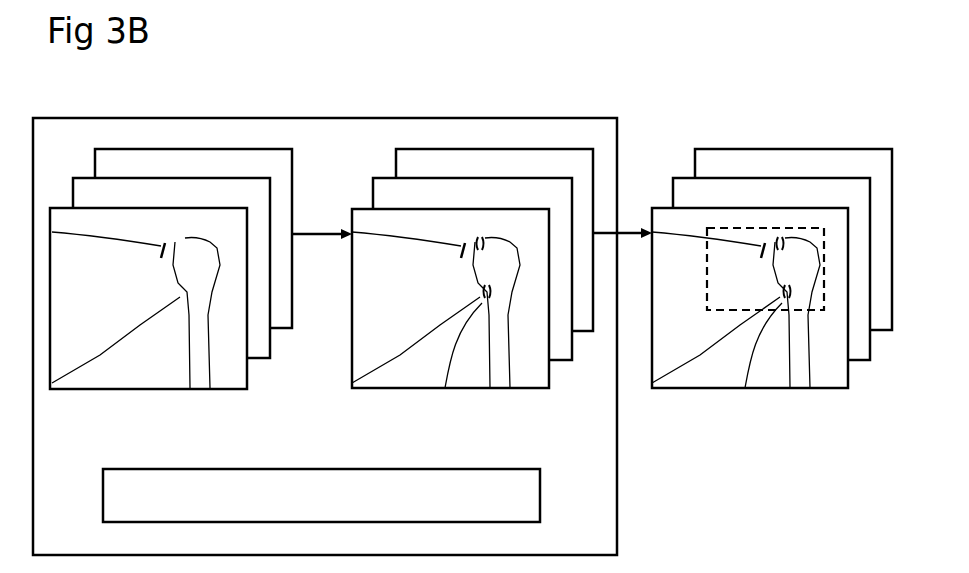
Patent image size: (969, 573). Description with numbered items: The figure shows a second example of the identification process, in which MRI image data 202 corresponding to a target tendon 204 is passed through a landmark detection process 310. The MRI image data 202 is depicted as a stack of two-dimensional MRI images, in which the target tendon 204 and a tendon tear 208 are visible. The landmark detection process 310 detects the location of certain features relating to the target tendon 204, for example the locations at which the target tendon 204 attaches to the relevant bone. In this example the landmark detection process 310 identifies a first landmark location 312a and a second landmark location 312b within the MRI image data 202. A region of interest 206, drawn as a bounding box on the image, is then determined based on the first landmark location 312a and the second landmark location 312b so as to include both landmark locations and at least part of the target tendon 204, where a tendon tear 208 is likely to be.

The MRI image data 202 is at (340, 405).
The target tendon 204 is at (470, 267).
The region of interest 206 is at (820, 227).
The tendon tear 208 is at (158, 258).
The landmark detection process 310 is at (333, 118).
The first landmark location 312a is at (483, 240).
The second landmark location 312b is at (485, 300).